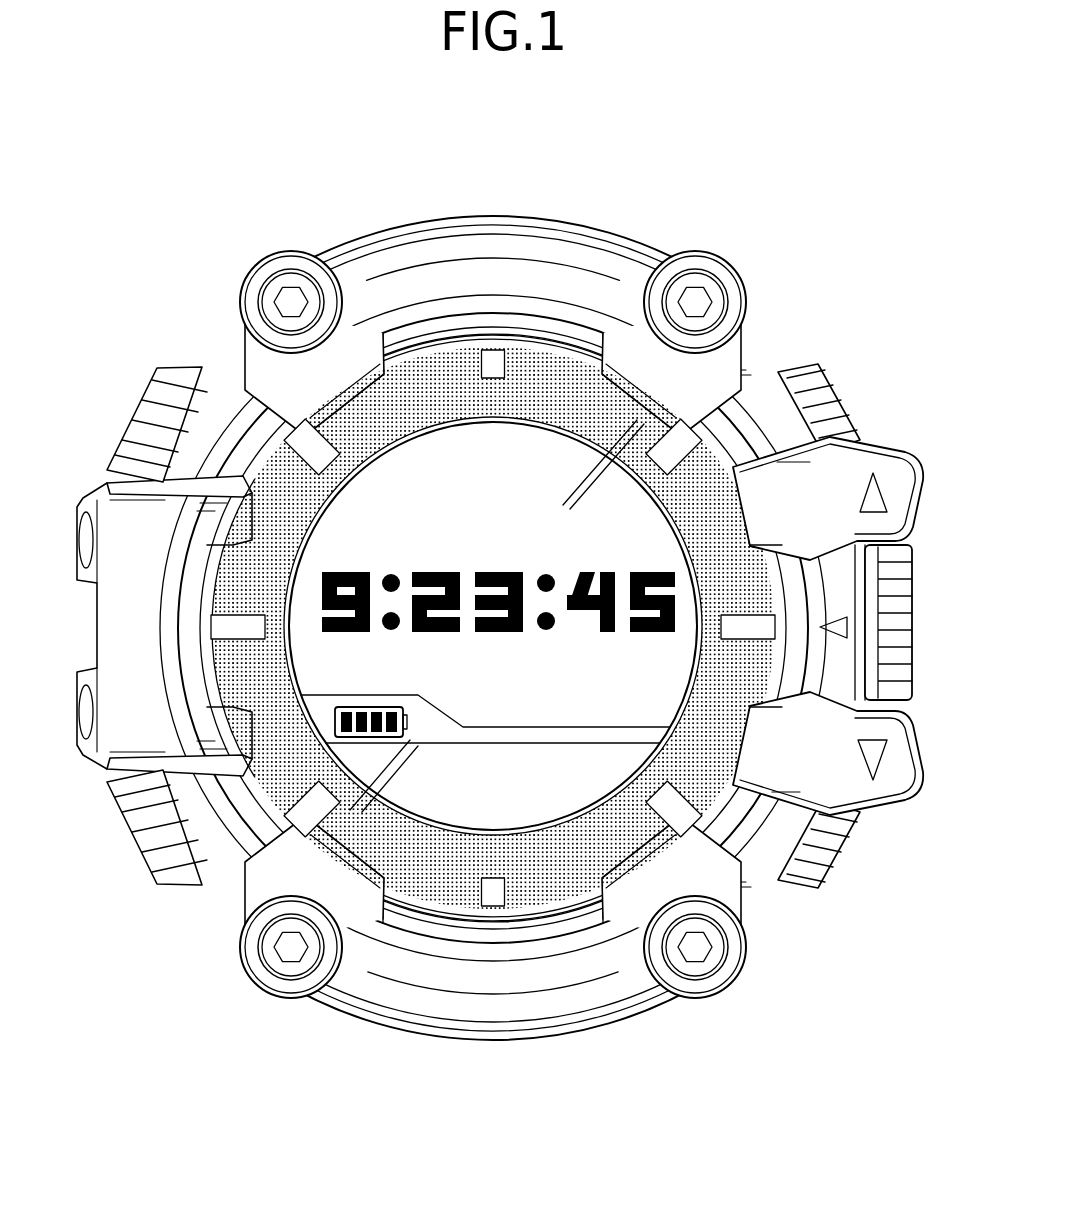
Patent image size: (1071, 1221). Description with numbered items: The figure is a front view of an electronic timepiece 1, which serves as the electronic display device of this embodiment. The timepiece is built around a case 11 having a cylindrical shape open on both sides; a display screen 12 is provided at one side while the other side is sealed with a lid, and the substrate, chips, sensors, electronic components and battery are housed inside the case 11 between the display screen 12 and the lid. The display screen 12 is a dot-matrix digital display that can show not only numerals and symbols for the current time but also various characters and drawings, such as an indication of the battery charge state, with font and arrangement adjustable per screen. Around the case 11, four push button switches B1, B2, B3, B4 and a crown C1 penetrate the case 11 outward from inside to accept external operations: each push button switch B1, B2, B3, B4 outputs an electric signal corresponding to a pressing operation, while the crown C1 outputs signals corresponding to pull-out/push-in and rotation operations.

The electronic timepiece 1 is at (698, 187).
The case 11 is at (500, 1003).
The display screen 12 is at (433, 497).
The push button switch B1 is at (833, 845).
The push button switch B2 is at (150, 417).
The push button switch B3 is at (147, 827).
The push button switch B4 is at (833, 407).
The crown C1 is at (898, 610).